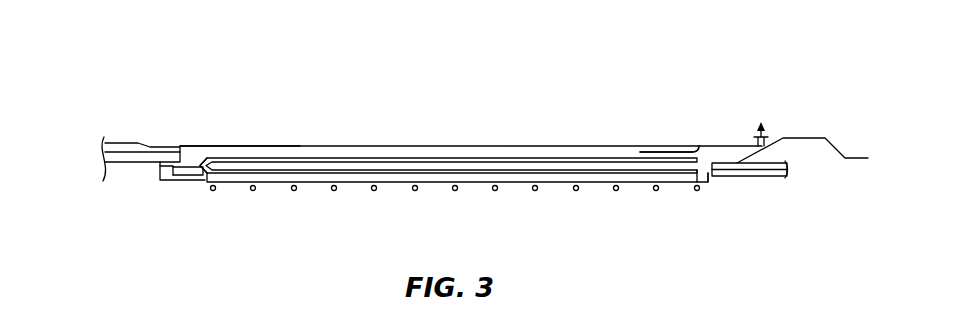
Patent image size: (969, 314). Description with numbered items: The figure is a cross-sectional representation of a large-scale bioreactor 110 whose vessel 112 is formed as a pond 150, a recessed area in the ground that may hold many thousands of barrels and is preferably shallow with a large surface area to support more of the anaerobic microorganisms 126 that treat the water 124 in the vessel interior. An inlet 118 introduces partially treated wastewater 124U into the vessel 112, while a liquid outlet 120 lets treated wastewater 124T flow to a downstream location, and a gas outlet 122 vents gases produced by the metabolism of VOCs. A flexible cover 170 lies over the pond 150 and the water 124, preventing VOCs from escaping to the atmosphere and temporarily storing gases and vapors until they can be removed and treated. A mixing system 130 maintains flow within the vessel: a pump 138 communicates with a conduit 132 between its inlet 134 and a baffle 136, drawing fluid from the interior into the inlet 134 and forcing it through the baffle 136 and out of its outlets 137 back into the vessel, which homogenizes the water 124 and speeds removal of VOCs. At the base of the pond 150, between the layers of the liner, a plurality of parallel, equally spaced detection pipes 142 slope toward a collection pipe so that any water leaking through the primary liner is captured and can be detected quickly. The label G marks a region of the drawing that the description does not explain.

The blade assembly 110 is at (127, 108).
The blade holder housing 118 is at (153, 157).
The blade 124 is at (448, 148).
The upper edge of blade 124U is at (184, 157).
The tip of blade 124T is at (857, 184).
The sleeve 170 is at (265, 143).
The end portions 137 is at (687, 144).
The clamp assembly 130 is at (210, 217).
The clamp member 132 is at (242, 212).
The clamp tang 134 is at (188, 180).
The clamp nose 136 is at (252, 160).
The clamp base 138 is at (163, 178).
The support bar 126 is at (467, 209).
The holes 142 is at (452, 194).
The gap G is at (616, 219).
The brackets 150 is at (594, 136).
The pin 122 is at (757, 139).
The adjustment direction 112 is at (777, 153).
The end member 120 is at (762, 178).